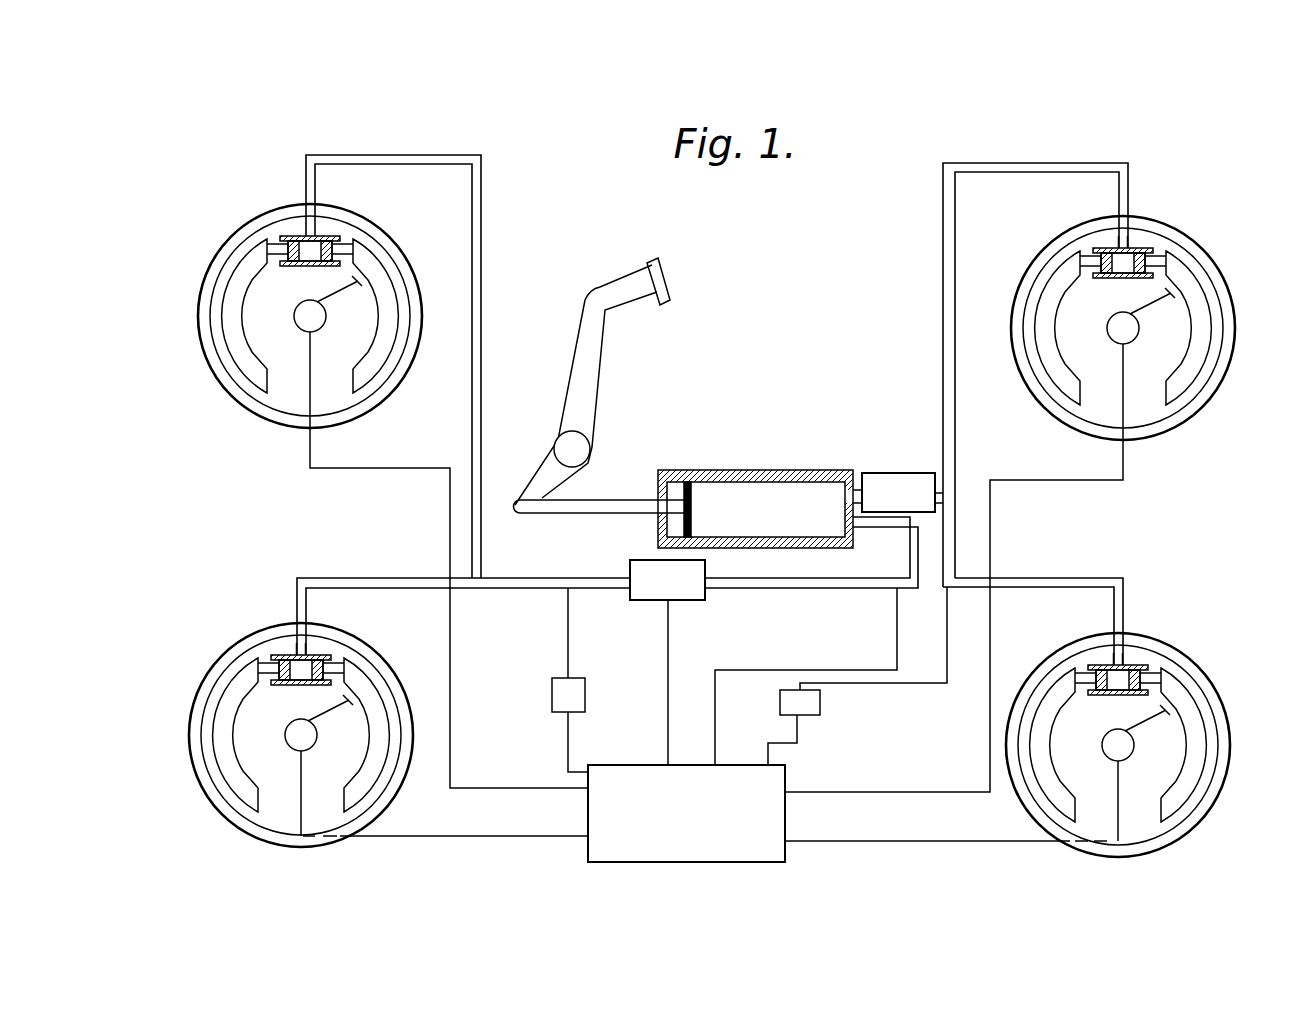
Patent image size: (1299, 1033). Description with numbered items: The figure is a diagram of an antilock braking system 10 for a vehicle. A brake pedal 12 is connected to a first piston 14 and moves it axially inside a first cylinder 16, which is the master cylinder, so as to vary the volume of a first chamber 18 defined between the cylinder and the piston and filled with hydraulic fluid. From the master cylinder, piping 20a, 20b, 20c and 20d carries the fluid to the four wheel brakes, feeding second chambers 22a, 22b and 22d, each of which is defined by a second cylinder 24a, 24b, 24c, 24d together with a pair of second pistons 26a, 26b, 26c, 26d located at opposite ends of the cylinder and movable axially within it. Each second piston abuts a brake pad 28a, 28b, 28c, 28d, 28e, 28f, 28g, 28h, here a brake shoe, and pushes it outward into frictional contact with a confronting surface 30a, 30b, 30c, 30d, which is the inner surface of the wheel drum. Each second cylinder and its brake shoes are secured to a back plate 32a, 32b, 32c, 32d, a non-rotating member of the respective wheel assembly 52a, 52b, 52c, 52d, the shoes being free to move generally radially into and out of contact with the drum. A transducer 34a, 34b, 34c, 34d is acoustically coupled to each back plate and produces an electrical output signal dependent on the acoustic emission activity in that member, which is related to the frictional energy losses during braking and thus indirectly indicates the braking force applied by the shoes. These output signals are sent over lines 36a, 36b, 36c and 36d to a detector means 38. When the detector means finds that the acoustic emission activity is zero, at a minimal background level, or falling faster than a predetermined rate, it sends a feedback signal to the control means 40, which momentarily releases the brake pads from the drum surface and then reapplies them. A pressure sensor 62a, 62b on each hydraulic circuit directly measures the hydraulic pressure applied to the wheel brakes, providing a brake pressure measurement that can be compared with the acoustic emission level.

The antilock braking system 10 is at (797, 322).
The brake pedal 12 is at (592, 345).
The first piston 14 is at (612, 507).
The first cylinder 16 is at (822, 472).
The first chamber 18 is at (748, 517).
The piping 20a is at (943, 357).
The piping 20b is at (1120, 595).
The piping 20c is at (481, 190).
The piping 20d is at (353, 578).
The second chamber 22a is at (1133, 243).
The second chamber 22b is at (1127, 670).
The second chamber 22d is at (297, 665).
The second cylinder 24a is at (1148, 247).
The second cylinder 24b is at (1153, 667).
The second cylinder 24c is at (283, 236).
The second cylinder 24d is at (273, 655).
The second pistons 26a is at (1090, 257).
The second pistons 26b is at (1087, 670).
The second pistons 26c is at (343, 243).
The second pistons 26d is at (335, 662).
The brake pad 28a is at (1058, 362).
The brake pad 28b is at (1193, 360).
The brake pad 28c is at (1065, 798).
The brake pad 28d is at (1173, 795).
The brake pad 28e is at (237, 297).
The brake pad 28f is at (378, 287).
The brake pad 28g is at (228, 740).
The brake pad 28h is at (372, 707).
The confronting surface 30a is at (1233, 326).
The confronting surface 30b is at (1213, 790).
The confronting surface 30c is at (208, 340).
The confronting surface 30d is at (247, 823).
The back plate 32a is at (1090, 305).
The back plate 32b is at (1067, 722).
The back plate 32c is at (358, 282).
The back plate 32d is at (320, 703).
The transducer 34a is at (1135, 330).
The transducer 34b is at (1122, 752).
The transducer 34c is at (318, 318).
The transducer 34d is at (300, 738).
The sensor signal line 36a is at (947, 791).
The sensor signal line 36b is at (913, 843).
The sensor signal line 36c is at (450, 610).
The sensor signal line 36d is at (477, 837).
The detector means 38 is at (672, 826).
The control means 40 is at (913, 493).
The wheel assembly 52a is at (1240, 287).
The wheel assembly 52b is at (1207, 833).
The wheel assembly 52c is at (265, 428).
The wheel assembly 52d is at (347, 843).
The pressure sensor 62a is at (793, 706).
The pressure sensor 62b is at (553, 700).